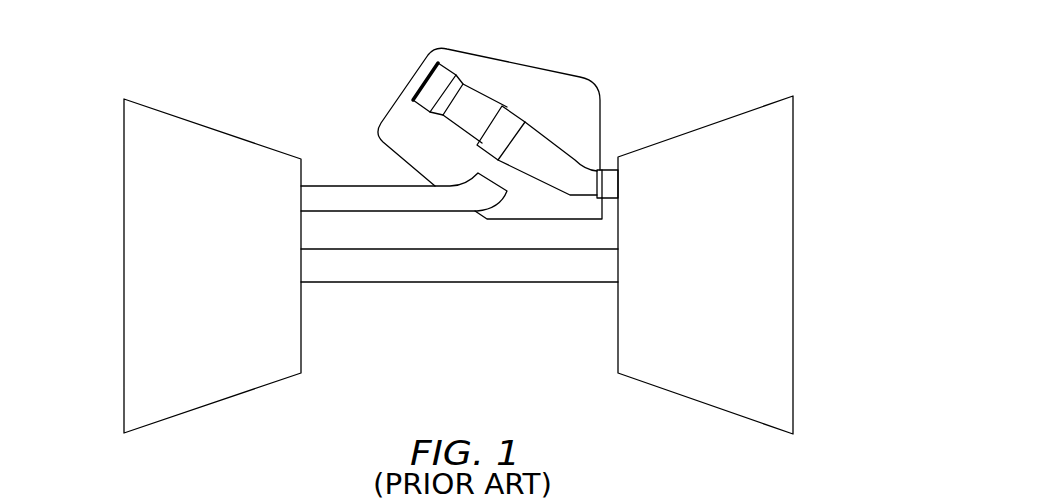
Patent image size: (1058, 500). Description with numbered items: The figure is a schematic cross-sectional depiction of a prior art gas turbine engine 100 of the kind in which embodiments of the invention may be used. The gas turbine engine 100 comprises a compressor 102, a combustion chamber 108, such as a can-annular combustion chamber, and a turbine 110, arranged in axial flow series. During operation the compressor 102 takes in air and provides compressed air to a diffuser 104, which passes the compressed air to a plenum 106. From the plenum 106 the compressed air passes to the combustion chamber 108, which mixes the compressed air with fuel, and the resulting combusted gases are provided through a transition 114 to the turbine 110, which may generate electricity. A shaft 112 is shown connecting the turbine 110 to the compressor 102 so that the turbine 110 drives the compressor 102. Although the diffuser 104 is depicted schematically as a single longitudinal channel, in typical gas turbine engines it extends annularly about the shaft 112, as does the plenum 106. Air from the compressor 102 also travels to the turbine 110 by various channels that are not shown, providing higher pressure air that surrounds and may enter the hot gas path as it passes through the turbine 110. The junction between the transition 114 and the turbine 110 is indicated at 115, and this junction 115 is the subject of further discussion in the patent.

The gas turbine engine 100 is at (296, 66).
The compressor 102 is at (239, 277).
The diffuser 104 is at (377, 185).
The plenum 106 is at (525, 88).
The combustion chamber 108 is at (470, 110).
The turbine 110 is at (727, 277).
The shaft 112 is at (482, 283).
The transition 114 is at (533, 152).
The junction 115 is at (602, 170).